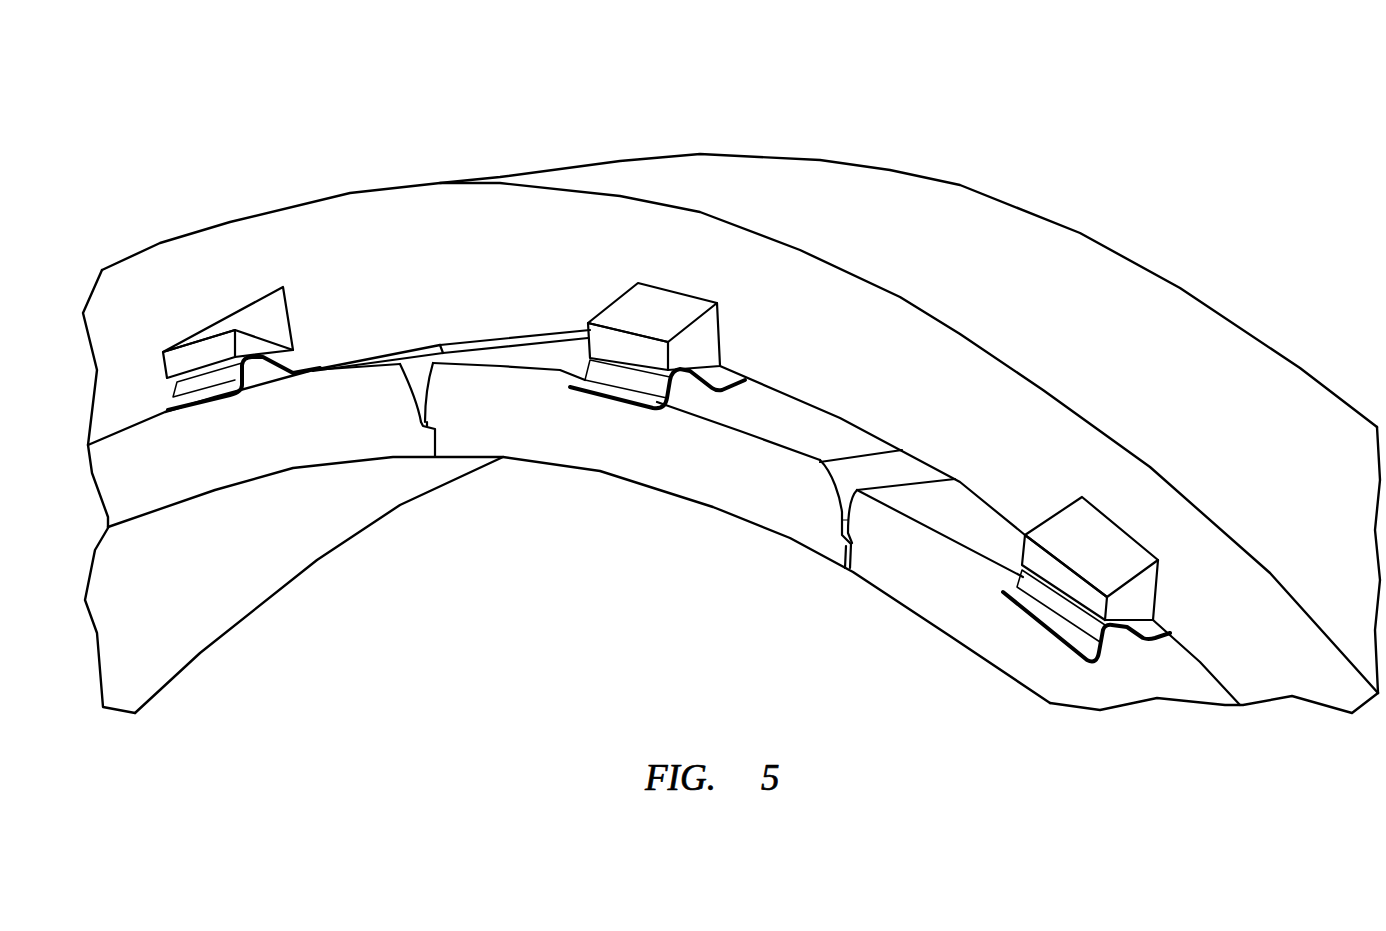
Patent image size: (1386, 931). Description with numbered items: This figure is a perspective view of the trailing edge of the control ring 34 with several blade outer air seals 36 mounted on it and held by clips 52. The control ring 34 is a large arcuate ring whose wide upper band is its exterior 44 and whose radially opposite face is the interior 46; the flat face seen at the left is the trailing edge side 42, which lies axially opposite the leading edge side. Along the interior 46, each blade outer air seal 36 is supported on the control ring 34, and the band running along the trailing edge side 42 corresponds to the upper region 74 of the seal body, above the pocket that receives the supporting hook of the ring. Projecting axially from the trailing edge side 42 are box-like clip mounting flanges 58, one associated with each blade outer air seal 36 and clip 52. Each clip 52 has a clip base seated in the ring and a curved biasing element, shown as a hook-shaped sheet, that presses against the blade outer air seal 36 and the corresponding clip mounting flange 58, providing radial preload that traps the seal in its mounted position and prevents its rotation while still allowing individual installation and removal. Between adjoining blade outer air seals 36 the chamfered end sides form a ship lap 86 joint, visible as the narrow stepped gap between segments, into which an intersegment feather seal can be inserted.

The control ring 34 is at (847, 150).
The blade outer air seal 36 is at (212, 466).
The trailing edge side 42 is at (342, 271).
The exterior 44 is at (962, 282).
The interior 46 is at (286, 530).
The clip 52 is at (645, 405).
The clip mounting flange 58 is at (223, 317).
The upper region 74 is at (793, 428).
The ship lap 86 is at (836, 578).